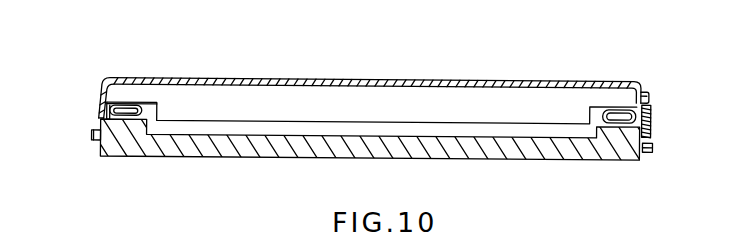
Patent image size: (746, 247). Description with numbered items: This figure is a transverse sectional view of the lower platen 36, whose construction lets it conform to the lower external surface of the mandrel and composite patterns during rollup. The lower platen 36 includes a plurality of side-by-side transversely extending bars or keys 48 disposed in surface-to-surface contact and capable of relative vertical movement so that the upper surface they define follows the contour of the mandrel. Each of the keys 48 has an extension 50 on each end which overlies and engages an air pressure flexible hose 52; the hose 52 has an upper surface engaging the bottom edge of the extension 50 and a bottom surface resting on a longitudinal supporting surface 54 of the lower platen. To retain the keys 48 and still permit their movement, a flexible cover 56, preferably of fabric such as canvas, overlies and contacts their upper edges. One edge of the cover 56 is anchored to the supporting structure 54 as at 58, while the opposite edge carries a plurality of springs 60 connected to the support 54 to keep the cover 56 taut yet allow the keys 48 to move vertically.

The lower platen 36 is at (616, 72).
The keys 48 is at (290, 94).
The extension 50 is at (629, 97).
The air pressure flexible hose 52 is at (613, 128).
The longitudinal supporting surface 54 is at (650, 118).
The flexible cover 56 is at (222, 79).
The anchored edge 58 is at (93, 139).
The springs 60 is at (653, 138).